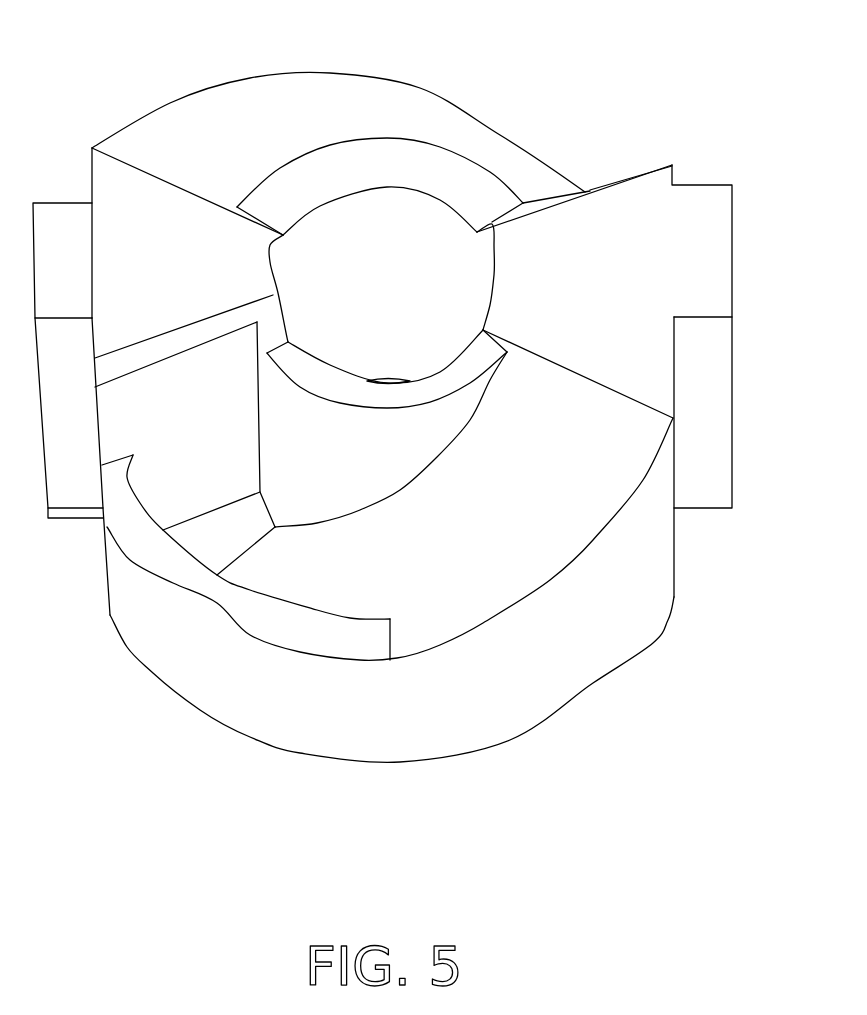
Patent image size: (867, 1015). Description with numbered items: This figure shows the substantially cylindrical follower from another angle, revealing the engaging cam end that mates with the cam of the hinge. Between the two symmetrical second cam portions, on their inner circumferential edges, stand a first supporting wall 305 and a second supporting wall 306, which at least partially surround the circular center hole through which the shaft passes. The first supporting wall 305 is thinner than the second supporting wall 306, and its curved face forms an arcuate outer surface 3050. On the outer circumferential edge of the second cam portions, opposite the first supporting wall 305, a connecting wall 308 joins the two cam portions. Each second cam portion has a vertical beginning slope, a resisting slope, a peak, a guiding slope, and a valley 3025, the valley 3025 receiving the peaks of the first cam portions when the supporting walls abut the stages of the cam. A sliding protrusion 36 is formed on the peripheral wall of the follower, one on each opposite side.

The second supporting wall 306 is at (315, 177).
The first supporting wall 305 is at (408, 395).
The arcuate outer surface 3050 is at (362, 450).
The valley 3025 is at (233, 530).
The connecting wall 308 is at (212, 593).
The sliding protrusion 36 is at (705, 370).